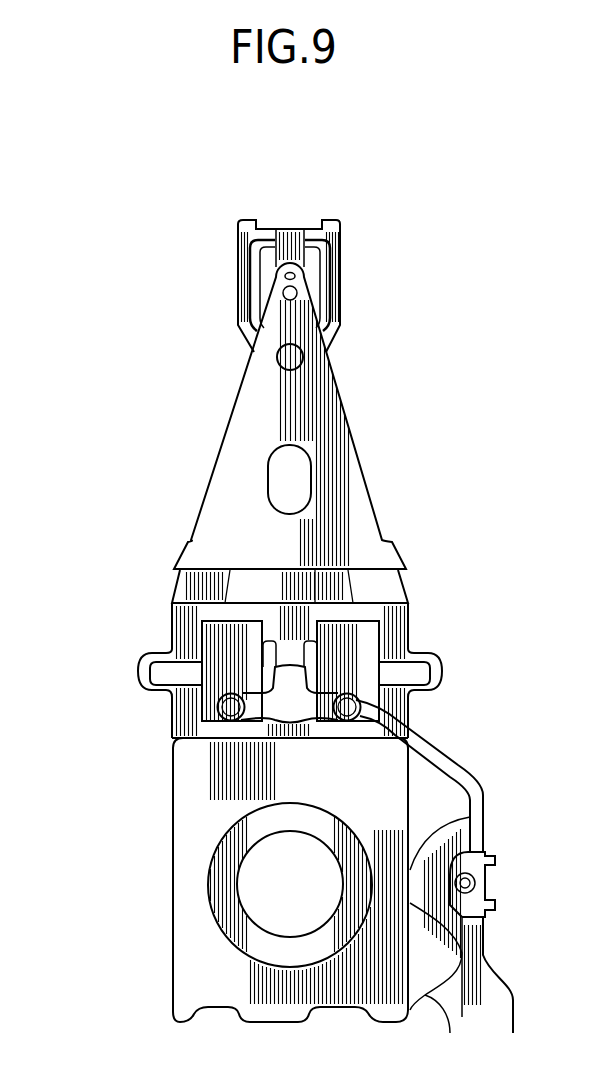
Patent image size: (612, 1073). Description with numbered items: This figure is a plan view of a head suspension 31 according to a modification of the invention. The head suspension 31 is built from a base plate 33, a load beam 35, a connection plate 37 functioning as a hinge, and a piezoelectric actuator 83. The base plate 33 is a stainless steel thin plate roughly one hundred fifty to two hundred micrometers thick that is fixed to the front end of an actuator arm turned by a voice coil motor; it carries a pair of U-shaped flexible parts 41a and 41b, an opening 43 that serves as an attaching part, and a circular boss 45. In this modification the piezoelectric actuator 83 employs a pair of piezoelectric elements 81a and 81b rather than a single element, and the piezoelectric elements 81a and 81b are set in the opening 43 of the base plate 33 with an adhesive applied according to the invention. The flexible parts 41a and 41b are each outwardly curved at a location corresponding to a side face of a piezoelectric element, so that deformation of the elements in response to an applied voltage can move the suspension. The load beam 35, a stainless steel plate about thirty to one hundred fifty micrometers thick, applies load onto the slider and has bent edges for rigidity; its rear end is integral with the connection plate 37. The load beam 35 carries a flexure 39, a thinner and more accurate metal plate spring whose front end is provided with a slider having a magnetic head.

The head suspension 31 is at (406, 220).
The base plate 33 is at (197, 852).
The load beam 35 is at (332, 473).
The connection plate 37 is at (385, 580).
The flexure 39 is at (332, 286).
The flexible part 41a is at (148, 672).
The flexible part 41b is at (441, 674).
The opening 43 is at (173, 673).
The circular boss 45 is at (230, 916).
The piezoelectric element 81a is at (232, 670).
The piezoelectric element 81b is at (347, 660).
The piezoelectric actuator 83 is at (534, 527).